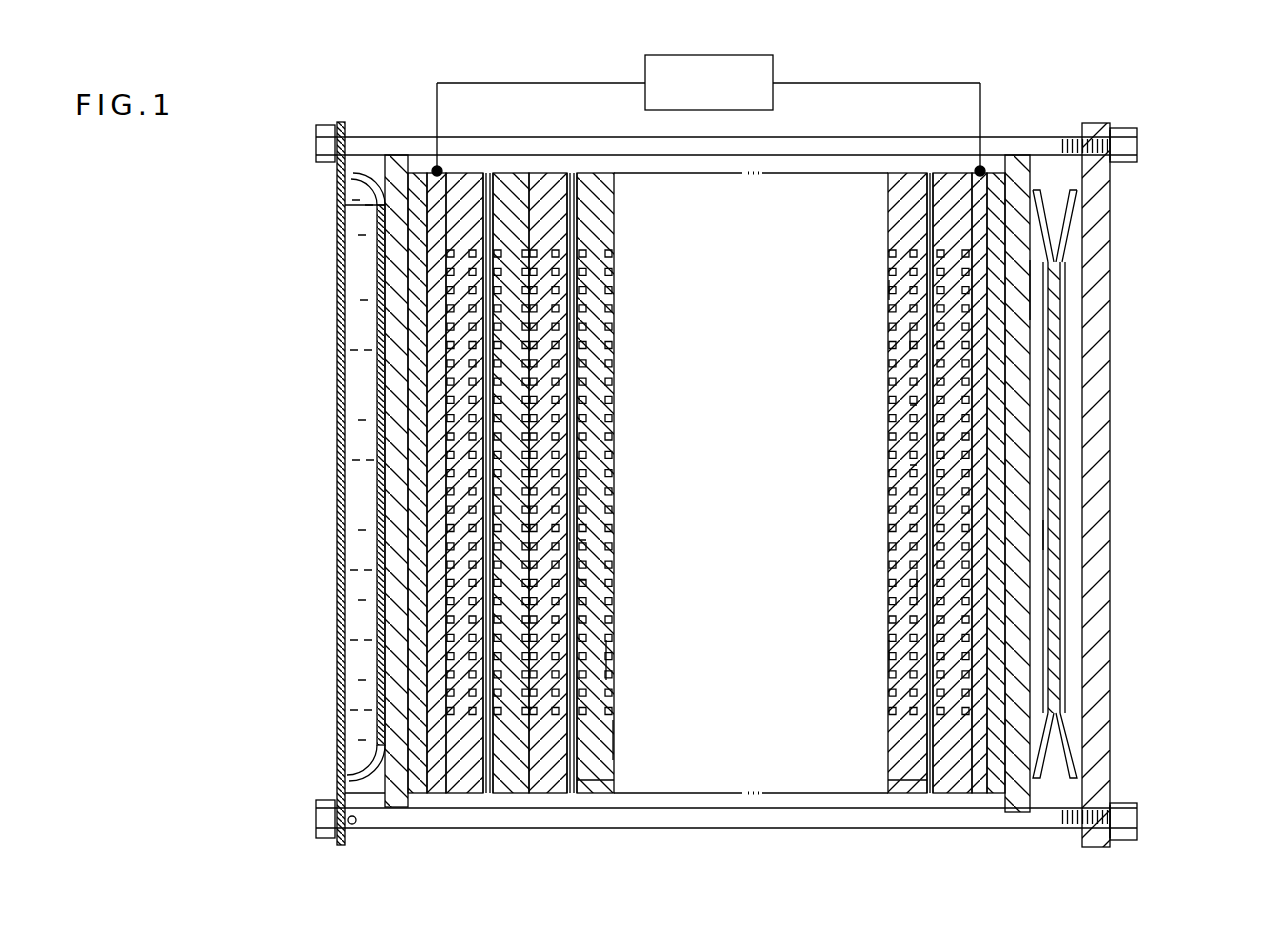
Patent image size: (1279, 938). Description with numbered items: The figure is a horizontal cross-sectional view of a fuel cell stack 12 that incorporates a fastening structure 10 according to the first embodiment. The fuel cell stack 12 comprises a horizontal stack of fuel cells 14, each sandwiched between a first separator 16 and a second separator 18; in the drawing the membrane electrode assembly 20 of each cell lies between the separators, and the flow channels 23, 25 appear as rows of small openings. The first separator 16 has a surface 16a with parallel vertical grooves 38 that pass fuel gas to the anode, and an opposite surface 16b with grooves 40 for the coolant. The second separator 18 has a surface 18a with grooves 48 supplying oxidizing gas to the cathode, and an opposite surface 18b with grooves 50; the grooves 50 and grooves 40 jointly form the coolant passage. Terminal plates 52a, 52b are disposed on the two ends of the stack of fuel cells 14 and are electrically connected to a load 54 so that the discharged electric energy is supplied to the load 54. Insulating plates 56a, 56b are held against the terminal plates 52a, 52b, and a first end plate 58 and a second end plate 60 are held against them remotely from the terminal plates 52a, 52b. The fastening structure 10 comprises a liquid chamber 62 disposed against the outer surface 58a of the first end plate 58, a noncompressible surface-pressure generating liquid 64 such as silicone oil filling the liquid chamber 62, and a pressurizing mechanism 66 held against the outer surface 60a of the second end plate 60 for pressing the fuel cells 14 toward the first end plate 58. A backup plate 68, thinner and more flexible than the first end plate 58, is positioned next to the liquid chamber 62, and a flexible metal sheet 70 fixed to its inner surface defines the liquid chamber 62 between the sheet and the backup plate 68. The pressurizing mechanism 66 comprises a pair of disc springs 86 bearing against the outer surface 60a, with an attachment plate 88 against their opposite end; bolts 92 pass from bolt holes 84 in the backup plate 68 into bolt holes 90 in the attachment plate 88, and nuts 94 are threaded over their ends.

The fastening structure 10 is at (346, 103).
The fuel cell stack 12 is at (1093, 65).
The fuel cell 14 is at (570, 170).
The first separator 16 is at (606, 215).
The surface of first separator 16a is at (606, 735).
The opposite surface of first separator 16b is at (611, 660).
The second separator 18 is at (540, 170).
The surface of second separator 18a is at (921, 585).
The opposite surface of second separator 18b is at (893, 652).
The membrane electrode assembly 20 is at (585, 792).
The gas flow passage 23 is at (585, 547).
The gas flow passage 25 is at (585, 582).
The grooves 38 is at (588, 395).
The grooves 40 is at (606, 366).
The grooves 48 is at (903, 340).
The grooves 50 is at (892, 290).
The terminal plate 52a is at (432, 800).
The terminal plate 52b is at (977, 797).
The load 54 is at (773, 60).
The insulating plate 56a is at (416, 797).
The insulating plate 56b is at (1003, 800).
The first end plate 58 is at (398, 165).
The outer surface of first end plate 58a is at (381, 207).
The second end plate 60 is at (1013, 168).
The outer surface of second end plate 60a is at (1031, 290).
The liquid chamber 62 is at (358, 462).
The surface-pressure generating liquid 64 is at (346, 402).
The pressurizing mechanism 66 is at (1069, 405).
The backup plate 68 is at (333, 693).
The flexible metal sheet 70 is at (381, 528).
The bolt holes 84 is at (350, 826).
The disc springs 86 is at (1064, 535).
The attachment plate 88 is at (1109, 692).
The bolt holes 90 is at (1122, 160).
The bolts 92 is at (790, 150).
The nuts 94 is at (1136, 143).